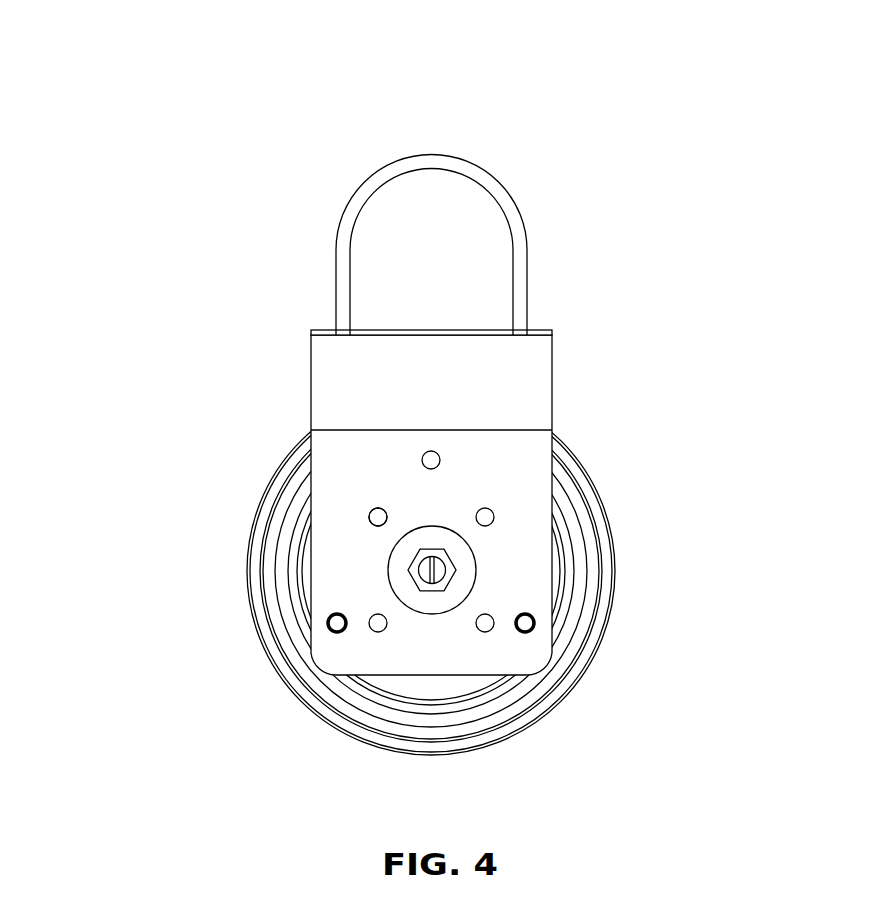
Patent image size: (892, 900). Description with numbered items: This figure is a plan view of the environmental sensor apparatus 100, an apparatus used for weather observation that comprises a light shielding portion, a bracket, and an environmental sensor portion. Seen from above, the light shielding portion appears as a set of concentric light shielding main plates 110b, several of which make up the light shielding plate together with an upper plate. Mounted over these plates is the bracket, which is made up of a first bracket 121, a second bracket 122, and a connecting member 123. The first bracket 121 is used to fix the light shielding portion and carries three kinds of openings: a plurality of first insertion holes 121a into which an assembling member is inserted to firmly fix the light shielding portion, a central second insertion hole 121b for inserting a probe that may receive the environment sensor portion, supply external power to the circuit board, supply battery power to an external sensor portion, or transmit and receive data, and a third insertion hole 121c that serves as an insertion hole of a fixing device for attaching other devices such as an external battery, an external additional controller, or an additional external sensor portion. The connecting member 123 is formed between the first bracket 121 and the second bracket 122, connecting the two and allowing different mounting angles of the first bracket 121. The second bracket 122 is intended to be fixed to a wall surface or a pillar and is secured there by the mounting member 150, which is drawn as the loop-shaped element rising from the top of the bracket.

The environmental sensor apparatus 100 is at (461, 45).
The mounting member 150 is at (507, 190).
The second bracket 122 is at (552, 330).
The connecting member 123 is at (552, 385).
The first bracket 121 is at (426, 547).
The first insertion hole 121a is at (327, 624).
The second insertion hole 121b is at (388, 570).
The third insertion hole 121c is at (369, 517).
The light shielding main plate 110b is at (583, 672).